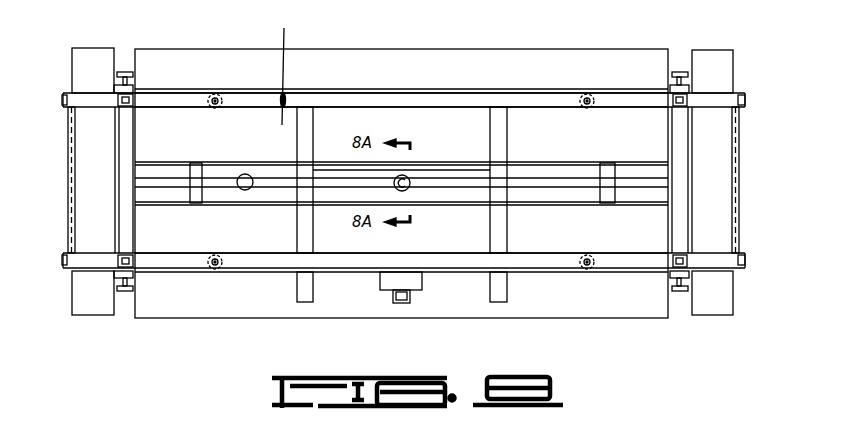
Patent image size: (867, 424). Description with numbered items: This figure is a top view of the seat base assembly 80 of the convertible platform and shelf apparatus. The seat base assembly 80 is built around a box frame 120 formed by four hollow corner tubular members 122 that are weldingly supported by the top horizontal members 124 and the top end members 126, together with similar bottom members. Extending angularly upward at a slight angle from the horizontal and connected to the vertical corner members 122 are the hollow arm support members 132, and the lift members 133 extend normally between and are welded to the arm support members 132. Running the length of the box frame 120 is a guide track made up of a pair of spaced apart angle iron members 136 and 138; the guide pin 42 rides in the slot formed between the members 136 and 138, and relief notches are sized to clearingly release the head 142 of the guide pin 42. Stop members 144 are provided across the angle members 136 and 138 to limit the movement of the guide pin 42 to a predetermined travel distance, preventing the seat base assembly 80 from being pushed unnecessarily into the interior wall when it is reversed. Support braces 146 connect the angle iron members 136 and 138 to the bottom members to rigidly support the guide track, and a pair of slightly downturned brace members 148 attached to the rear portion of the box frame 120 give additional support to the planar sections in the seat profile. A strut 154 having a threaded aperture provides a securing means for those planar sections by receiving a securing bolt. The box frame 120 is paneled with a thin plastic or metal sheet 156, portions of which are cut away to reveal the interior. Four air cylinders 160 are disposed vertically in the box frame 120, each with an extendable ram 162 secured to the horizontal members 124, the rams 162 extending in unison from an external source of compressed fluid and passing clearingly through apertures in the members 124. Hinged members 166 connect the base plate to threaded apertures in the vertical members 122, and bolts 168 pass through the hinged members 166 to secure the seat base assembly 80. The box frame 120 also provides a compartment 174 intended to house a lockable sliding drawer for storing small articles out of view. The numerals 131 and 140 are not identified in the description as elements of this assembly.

The guide pin 42 is at (404, 182).
The seat base assembly 80 is at (549, 46).
The box frame 120 is at (462, 108).
The corner tubular members 122 is at (133, 98).
The top horizontal members 124 is at (377, 102).
The top end members 126 is at (117, 135).
The compartment 131 is at (468, 150).
The arm support members 132 is at (82, 97).
The lift members 133 is at (71, 203).
The angle iron member 136 is at (499, 170).
The angle iron member 138 is at (525, 200).
The roller 140 is at (247, 190).
The head 142 is at (405, 191).
The stop members 144 is at (196, 192).
The support braces 146 is at (497, 118).
The brace members 148 is at (301, 292).
The strut 154 is at (404, 305).
The sheet 156 is at (450, 97).
The air cylinders 160 is at (208, 108).
The extendable ram 162 is at (222, 108).
The hinged members 166 is at (113, 86).
The bolts 168 is at (127, 70).
The compartment 174 is at (283, 66).